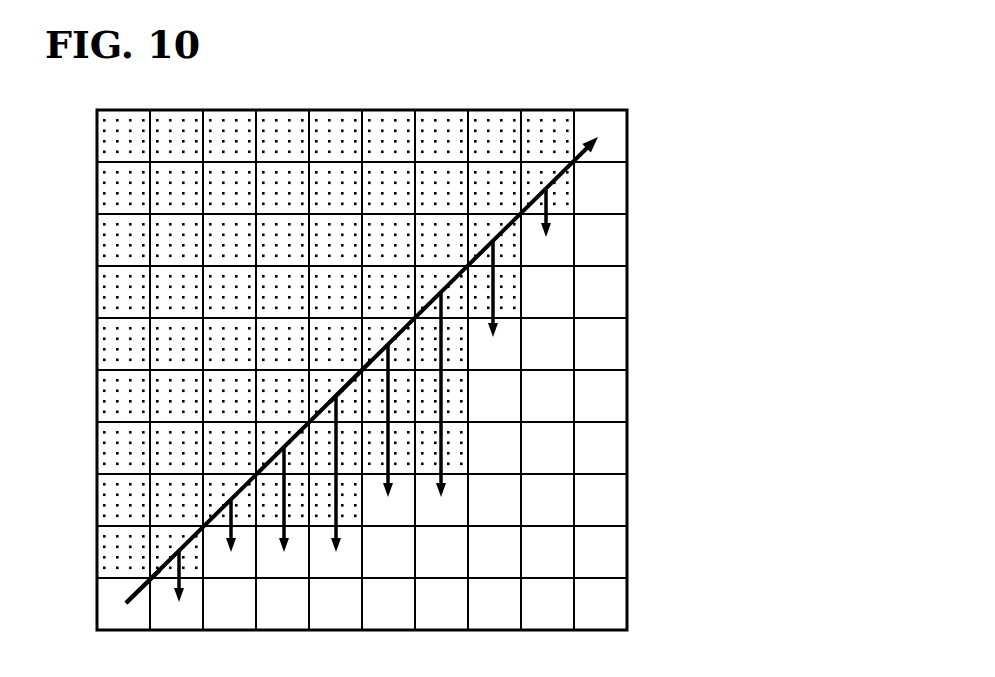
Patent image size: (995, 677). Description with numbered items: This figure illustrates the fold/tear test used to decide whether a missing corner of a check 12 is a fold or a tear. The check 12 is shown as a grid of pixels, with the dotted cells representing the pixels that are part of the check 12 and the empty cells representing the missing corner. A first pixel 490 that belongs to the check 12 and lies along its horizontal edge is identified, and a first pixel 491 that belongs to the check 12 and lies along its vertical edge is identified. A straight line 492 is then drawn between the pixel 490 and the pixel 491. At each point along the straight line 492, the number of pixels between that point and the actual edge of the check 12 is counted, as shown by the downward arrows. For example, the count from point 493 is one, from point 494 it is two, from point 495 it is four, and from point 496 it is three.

The check 12 is at (628, 446).
The first pixel along horizontal edge 490 is at (613, 150).
The first pixel along vertical edge 491 is at (112, 590).
The straight line 492 is at (350, 380).
The point on straight line 493 is at (546, 186).
The point on straight line 494 is at (492, 240).
The point on straight line 495 is at (440, 291).
The point on straight line 496 is at (388, 343).